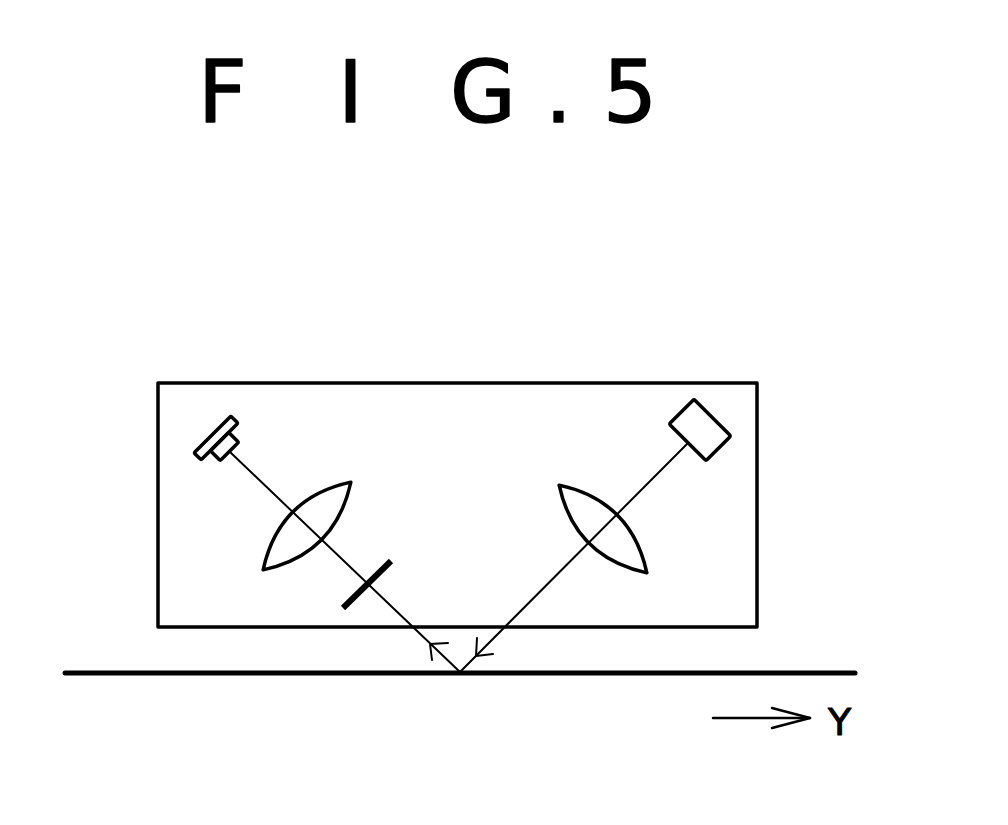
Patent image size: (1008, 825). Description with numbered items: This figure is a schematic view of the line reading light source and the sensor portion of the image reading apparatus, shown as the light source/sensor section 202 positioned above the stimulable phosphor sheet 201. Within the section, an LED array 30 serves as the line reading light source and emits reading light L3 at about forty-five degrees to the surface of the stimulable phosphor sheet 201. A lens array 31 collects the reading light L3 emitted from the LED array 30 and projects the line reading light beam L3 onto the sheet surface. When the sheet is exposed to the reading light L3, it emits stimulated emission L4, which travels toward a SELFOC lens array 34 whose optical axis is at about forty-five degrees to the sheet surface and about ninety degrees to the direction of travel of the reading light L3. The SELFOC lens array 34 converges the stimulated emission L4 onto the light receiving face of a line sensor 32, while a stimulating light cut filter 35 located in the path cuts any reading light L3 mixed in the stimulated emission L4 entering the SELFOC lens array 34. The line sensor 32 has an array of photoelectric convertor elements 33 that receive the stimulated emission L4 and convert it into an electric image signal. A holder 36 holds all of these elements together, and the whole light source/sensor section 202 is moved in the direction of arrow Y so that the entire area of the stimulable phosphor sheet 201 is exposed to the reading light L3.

The LED array 30 is at (707, 403).
The lens array 31 is at (652, 563).
The line sensor 32 is at (209, 419).
The photoelectric convertor elements 33 is at (238, 440).
The SELFOC lens array 34 is at (267, 542).
The stimulating light cut filter 35 is at (383, 559).
The holder 36 is at (758, 482).
The stimulable phosphor sheet 201 is at (806, 670).
The light source/sensor section 202 is at (464, 381).
The reading light L3 is at (496, 634).
The stimulated emission L4 is at (417, 634).